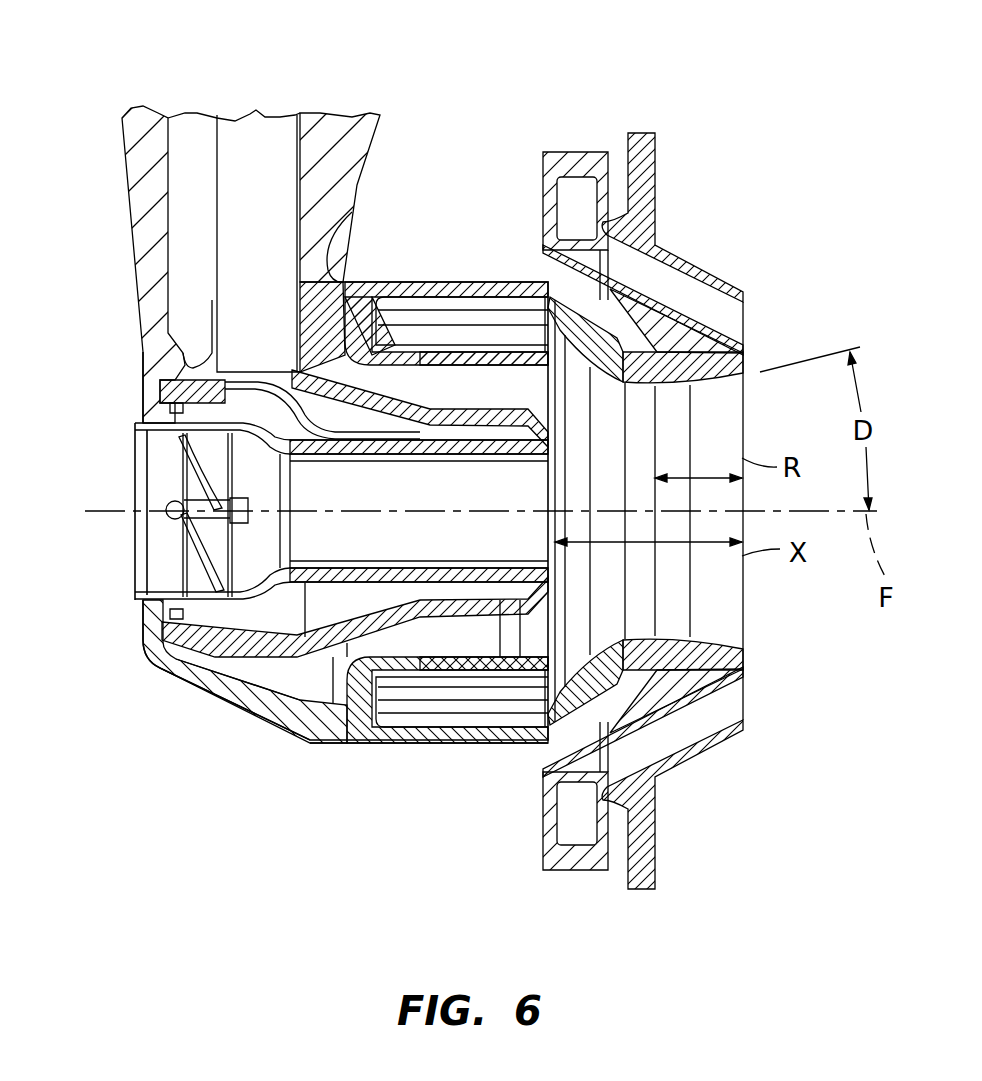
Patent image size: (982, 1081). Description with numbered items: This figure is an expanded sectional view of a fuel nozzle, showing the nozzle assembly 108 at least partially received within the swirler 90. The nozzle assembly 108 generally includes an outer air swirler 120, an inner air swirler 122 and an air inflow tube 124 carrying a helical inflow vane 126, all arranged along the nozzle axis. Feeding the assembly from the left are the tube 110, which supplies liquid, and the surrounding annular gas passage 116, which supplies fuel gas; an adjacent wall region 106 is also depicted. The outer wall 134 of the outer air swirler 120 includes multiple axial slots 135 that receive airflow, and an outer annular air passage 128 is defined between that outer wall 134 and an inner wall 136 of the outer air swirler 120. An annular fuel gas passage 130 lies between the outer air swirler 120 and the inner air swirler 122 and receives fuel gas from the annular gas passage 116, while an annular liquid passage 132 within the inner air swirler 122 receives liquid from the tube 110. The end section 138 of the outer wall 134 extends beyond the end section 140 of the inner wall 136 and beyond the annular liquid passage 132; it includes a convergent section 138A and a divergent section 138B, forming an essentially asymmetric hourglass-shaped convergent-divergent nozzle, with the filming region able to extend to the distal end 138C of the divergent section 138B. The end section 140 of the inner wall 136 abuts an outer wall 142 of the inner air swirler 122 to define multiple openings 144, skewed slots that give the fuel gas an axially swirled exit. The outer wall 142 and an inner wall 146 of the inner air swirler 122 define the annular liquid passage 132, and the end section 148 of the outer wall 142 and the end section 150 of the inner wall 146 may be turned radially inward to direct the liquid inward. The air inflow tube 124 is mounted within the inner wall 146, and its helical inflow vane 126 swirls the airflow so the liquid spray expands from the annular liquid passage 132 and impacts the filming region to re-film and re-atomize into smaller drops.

The swirler 90 is at (699, 263).
The outer wall 106 is at (356, 115).
The nozzle assembly 108 is at (337, 819).
The tube 110 is at (276, 112).
The annular gas passage 116 is at (190, 250).
The outer air swirler 120 is at (456, 746).
The inner air swirler 122 is at (390, 387).
The air inflow tube 124 is at (157, 572).
The helical inflow vane 126 is at (182, 465).
The outer annular air passage 128 is at (437, 748).
The annular fuel gas passage 130 is at (313, 705).
The annular liquid passage 132 is at (300, 405).
The outer wall 134 is at (473, 290).
The axial slots 135 is at (445, 318).
The inner wall 136 is at (382, 720).
The end section 138 is at (660, 705).
The convergent section 138A is at (641, 661).
The divergent section 138B is at (720, 695).
The distal end 138C is at (745, 655).
The end section 140 is at (540, 680).
The outer wall 142 is at (500, 657).
The openings 144 is at (512, 385).
The inner wall 146 is at (360, 560).
The end section 148 is at (500, 556).
The end section 150 is at (510, 560).